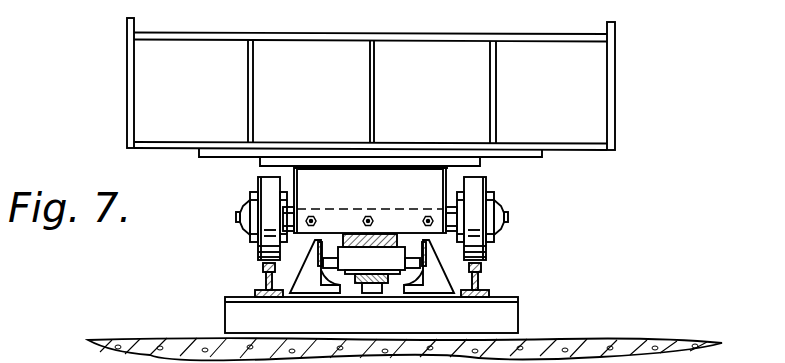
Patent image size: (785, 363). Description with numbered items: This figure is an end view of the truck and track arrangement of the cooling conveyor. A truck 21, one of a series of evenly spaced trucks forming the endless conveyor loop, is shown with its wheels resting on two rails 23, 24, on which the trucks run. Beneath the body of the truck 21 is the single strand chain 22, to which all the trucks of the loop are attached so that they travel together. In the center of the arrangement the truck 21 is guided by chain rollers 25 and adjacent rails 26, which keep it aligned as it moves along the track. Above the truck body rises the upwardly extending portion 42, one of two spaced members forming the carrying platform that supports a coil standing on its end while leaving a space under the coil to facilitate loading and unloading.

The upwardly extending portion 42 is at (487, 34).
The truck 21 is at (513, 172).
The single strand chain 22 is at (375, 292).
The rail 23 is at (482, 268).
The rail 24 is at (262, 267).
The chain roller 25 is at (356, 262).
The adjacent rail 26 is at (313, 245).